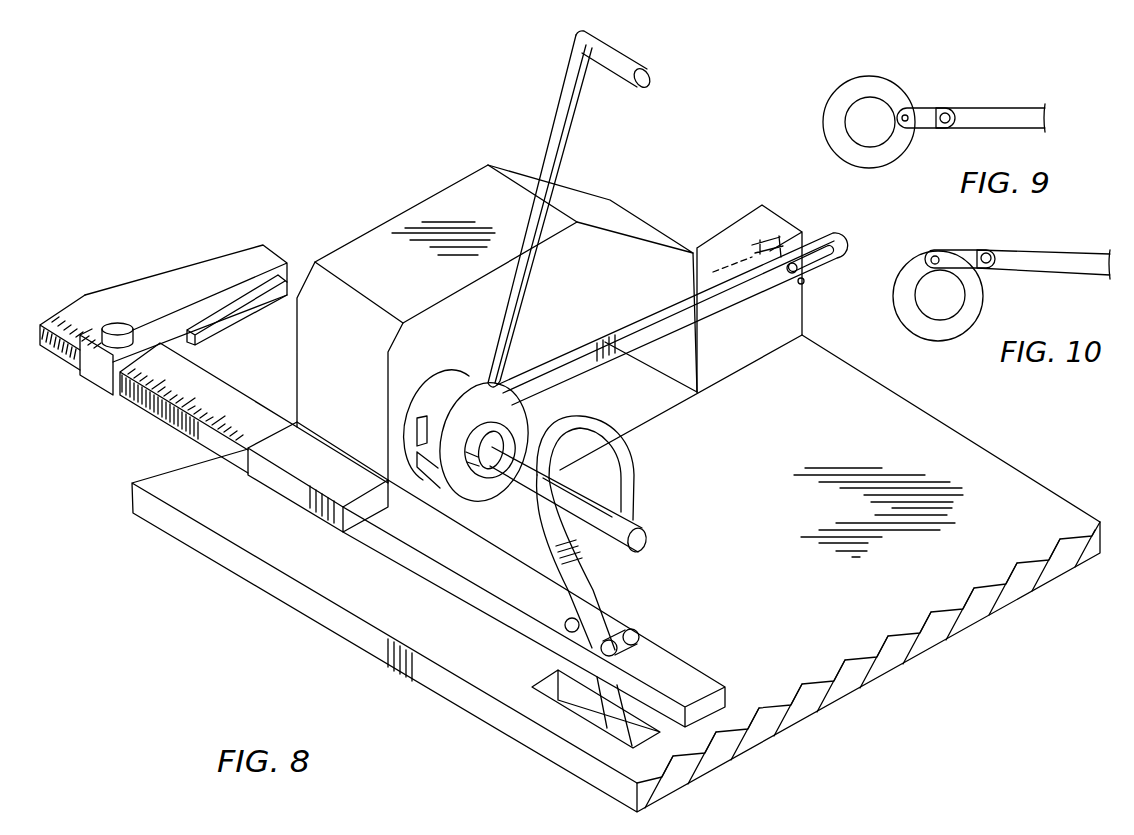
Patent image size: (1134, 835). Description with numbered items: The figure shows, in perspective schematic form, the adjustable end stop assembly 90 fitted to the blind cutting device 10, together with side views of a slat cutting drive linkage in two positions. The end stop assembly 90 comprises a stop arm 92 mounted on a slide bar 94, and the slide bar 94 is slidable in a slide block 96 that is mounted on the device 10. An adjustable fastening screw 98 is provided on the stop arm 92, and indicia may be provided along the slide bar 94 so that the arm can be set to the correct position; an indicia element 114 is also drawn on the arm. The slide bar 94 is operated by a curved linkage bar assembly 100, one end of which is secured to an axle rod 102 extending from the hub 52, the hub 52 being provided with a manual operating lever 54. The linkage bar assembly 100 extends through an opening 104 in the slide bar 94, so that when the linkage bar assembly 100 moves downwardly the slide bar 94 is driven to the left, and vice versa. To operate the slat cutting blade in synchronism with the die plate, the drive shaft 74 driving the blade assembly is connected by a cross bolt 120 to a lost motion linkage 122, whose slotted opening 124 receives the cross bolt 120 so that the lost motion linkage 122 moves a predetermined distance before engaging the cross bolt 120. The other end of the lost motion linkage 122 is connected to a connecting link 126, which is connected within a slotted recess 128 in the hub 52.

In FIG. 8, the device 10 is at (412, 176).
In FIG. 8, the hub 52 is at (470, 485).
In FIG. 9, the hub 52 is at (826, 106).
In FIG. 10, the hub 52 is at (907, 262).
In FIG. 8, the manual operating lever 54 is at (560, 95).
In FIG. 8, the drive shaft 74 is at (738, 254).
In FIG. 8, the end stop assembly 90 is at (168, 270).
In FIG. 8, the stop arm 92 is at (240, 268).
In FIG. 8, the slide bar 94 is at (80, 312).
In FIG. 8, the slide block 96 is at (273, 478).
In FIG. 8, the adjustable fastening screw 98 is at (117, 323).
In FIG. 8, the curved linkage bar assembly 100 is at (583, 577).
In FIG. 8, the axle rod 102 is at (648, 535).
In FIG. 8, the opening 104 is at (630, 627).
In FIG. 8, the slide bar 114 is at (250, 312).
In FIG. 8, the cross bolt 120 is at (800, 338).
In FIG. 8, the lost motion linkage 122 is at (608, 343).
In FIG. 9, the lost motion linkage 122 is at (990, 107).
In FIG. 10, the lost motion linkage 122 is at (1047, 252).
In FIG. 8, the slotted opening 124 is at (823, 260).
In FIG. 8, the connecting link 126 is at (417, 433).
In FIG. 9, the connecting link 126 is at (928, 105).
In FIG. 10, the connecting link 126 is at (955, 250).
In FIG. 8, the slotted recess 128 is at (455, 380).